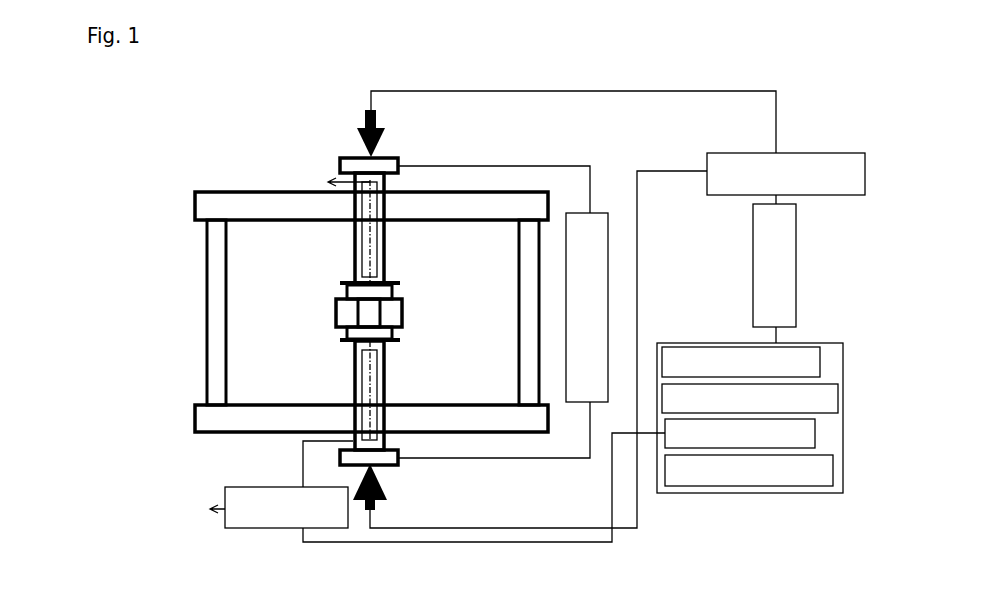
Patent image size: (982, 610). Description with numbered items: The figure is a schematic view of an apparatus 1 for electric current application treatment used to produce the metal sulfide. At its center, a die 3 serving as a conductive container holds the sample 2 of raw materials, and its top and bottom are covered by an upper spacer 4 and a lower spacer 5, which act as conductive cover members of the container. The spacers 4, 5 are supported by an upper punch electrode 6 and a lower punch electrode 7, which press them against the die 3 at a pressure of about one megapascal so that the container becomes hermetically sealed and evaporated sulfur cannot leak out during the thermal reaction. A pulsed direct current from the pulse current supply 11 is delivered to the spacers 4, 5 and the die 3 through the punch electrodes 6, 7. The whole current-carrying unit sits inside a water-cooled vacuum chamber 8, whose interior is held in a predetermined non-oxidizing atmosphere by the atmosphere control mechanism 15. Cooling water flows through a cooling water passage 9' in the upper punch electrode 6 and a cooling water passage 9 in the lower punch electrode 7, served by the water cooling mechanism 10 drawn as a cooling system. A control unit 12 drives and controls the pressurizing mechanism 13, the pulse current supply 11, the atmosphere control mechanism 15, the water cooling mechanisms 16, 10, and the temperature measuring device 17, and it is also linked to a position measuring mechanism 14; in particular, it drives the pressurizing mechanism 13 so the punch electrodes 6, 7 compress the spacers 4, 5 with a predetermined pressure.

The apparatus for electric current application treatment 1 is at (433, 303).
The sample 2 is at (367, 311).
The die 3 is at (390, 307).
The upper spacer 4 is at (372, 293).
The lower spacer 5 is at (372, 331).
The upper punch electrode 6 is at (362, 268).
The lower punch electrode 7 is at (363, 354).
The water-cooled vacuum chamber 8 is at (217, 367).
The cooling water passage 9 is at (315, 395).
The cooling water passage 9' is at (314, 229).
The water cooling mechanism 10 is at (286, 507).
The pulse current supply 11 is at (589, 307).
The control unit 12 is at (776, 265).
The pressurizing mechanism 13 is at (786, 174).
The position measuring mechanism 14 is at (741, 362).
The atmosphere control mechanism 15 is at (750, 398).
The water cooling mechanism 16 is at (740, 433).
The temperature measuring device 17 is at (749, 470).